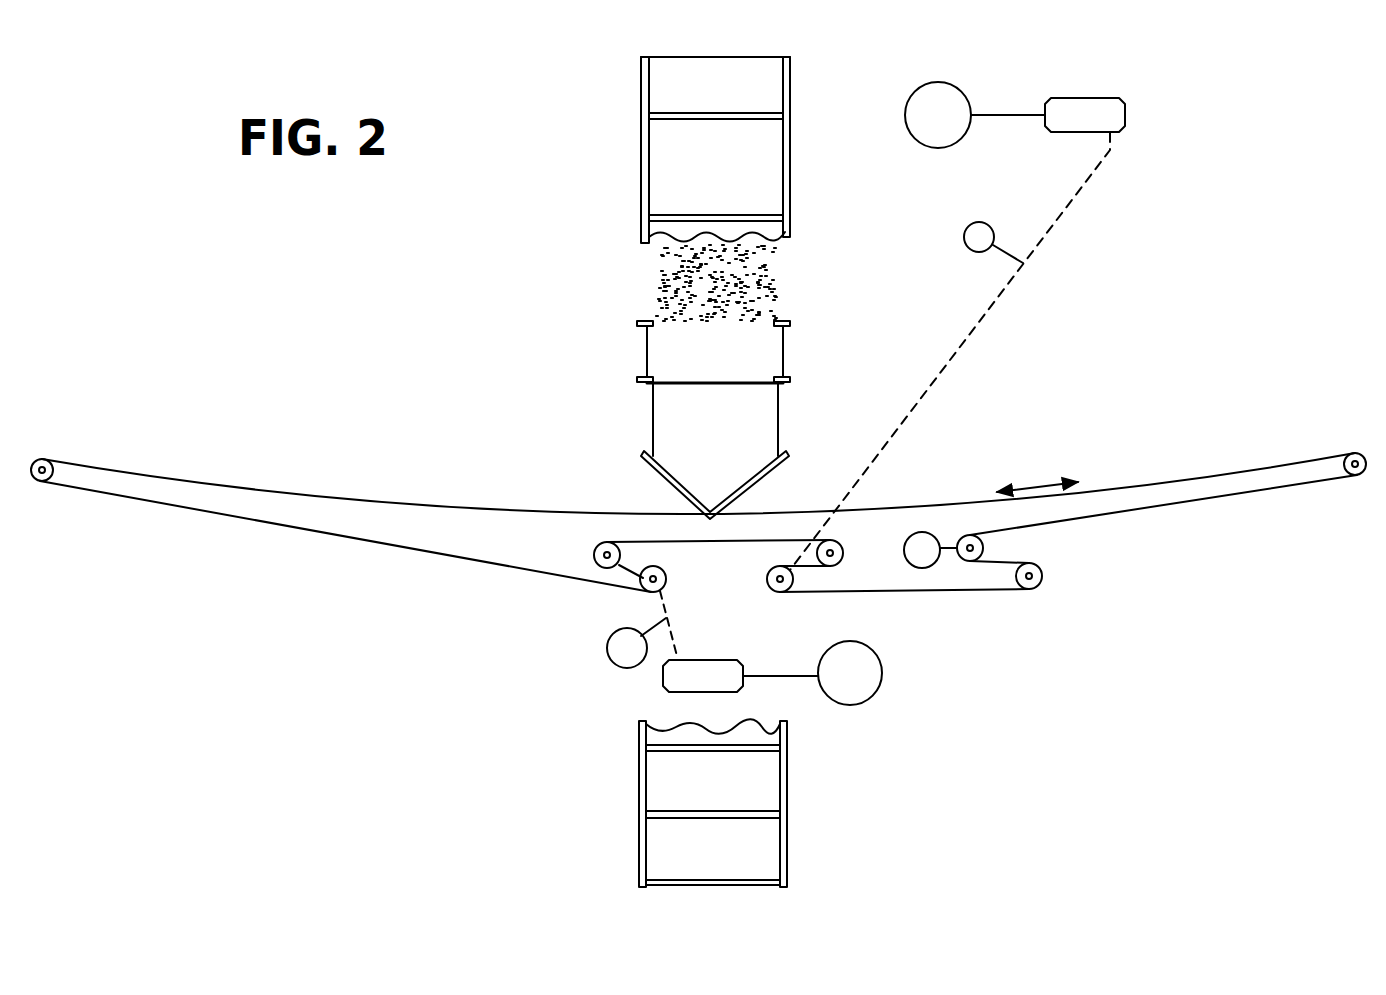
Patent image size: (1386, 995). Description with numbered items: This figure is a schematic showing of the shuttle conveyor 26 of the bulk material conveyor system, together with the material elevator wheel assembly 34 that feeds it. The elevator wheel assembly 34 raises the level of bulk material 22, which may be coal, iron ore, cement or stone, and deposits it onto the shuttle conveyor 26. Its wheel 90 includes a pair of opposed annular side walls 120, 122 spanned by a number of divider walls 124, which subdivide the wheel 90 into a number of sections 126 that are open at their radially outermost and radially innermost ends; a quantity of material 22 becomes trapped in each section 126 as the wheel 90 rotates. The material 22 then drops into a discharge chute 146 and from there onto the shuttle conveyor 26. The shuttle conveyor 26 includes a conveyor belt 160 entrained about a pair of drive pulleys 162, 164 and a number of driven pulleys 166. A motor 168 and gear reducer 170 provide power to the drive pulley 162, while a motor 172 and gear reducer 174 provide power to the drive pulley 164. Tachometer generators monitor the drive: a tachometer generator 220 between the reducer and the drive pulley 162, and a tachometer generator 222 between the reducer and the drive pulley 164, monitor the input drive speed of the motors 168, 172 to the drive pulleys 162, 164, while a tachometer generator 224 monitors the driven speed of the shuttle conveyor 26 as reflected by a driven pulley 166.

The bulk material 22 is at (747, 280).
The shuttle conveyor 26 is at (1094, 428).
The material elevator wheel assembly 34 is at (795, 804).
The wheel 90 is at (746, 462).
The annular side wall 120 is at (638, 153).
The annular side wall 122 is at (792, 128).
The divider walls 124 is at (767, 110).
The sections 126 is at (731, 858).
The discharge chute 146 is at (645, 420).
The conveyor belt 160 is at (1240, 500).
The drive pulley 162 is at (641, 587).
The drive pulley 164 is at (773, 583).
The driven pulleys 166 is at (48, 482).
The motor 168 is at (884, 678).
The gear reducer 170 is at (670, 684).
The motor 172 is at (958, 88).
The gear reducer 174 is at (1125, 112).
The tachometer generator 220 is at (607, 656).
The tachometer generator 222 is at (1008, 205).
The tachometer generator 224 is at (932, 567).